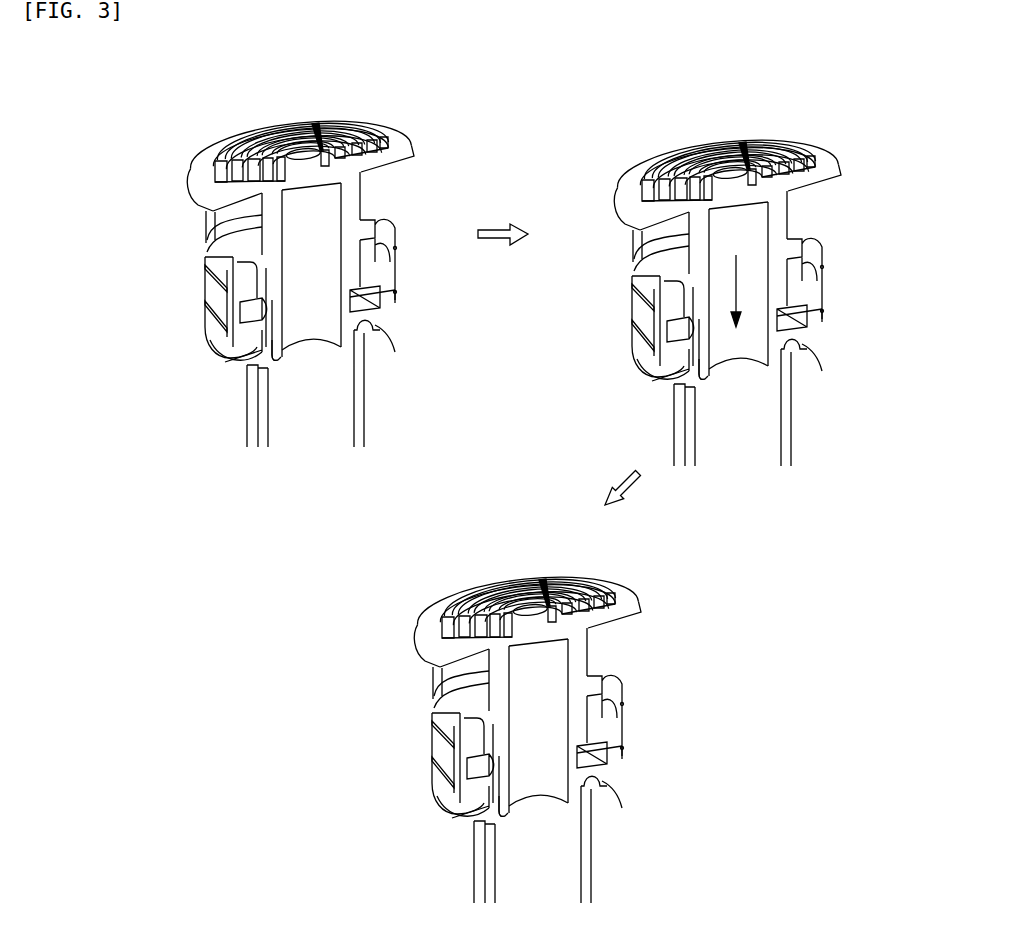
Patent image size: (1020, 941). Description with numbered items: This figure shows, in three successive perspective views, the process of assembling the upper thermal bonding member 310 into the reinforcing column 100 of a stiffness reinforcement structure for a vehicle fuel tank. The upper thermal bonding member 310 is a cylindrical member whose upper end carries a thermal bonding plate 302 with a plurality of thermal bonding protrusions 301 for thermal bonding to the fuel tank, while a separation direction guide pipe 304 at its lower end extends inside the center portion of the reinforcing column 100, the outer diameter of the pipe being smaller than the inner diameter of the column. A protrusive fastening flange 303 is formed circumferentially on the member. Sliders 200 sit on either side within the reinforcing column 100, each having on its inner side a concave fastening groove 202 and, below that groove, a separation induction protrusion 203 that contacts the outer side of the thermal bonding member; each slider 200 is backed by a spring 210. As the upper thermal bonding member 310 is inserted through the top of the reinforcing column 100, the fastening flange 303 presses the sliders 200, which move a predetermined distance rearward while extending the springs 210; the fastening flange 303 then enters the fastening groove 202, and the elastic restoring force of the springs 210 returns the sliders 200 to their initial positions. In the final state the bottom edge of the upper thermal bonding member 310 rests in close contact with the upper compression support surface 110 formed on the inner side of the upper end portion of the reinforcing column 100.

The reinforcing column 100 is at (365, 410).
The upper compression support surface 110 is at (375, 332).
The slider 200 is at (397, 226).
The fastening groove 202 is at (374, 296).
The separation induction protrusion 203 is at (380, 304).
The spring 210 is at (213, 315).
The thermal bonding protrusion 301 is at (316, 124).
The thermal bonding plate 302 is at (404, 153).
The fastening flange 303 is at (222, 243).
The separation direction guide pipe 304 is at (280, 358).
The upper thermal bonding member 310 is at (393, 131).